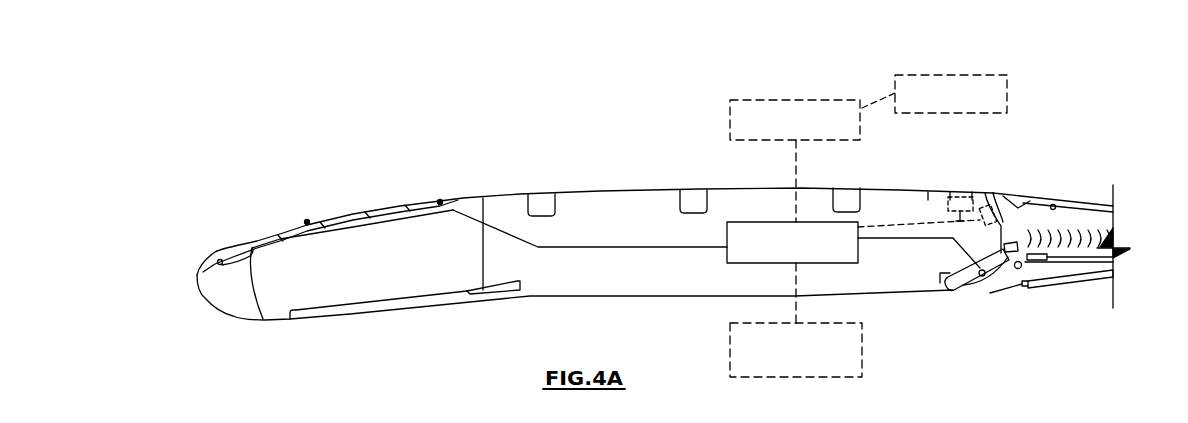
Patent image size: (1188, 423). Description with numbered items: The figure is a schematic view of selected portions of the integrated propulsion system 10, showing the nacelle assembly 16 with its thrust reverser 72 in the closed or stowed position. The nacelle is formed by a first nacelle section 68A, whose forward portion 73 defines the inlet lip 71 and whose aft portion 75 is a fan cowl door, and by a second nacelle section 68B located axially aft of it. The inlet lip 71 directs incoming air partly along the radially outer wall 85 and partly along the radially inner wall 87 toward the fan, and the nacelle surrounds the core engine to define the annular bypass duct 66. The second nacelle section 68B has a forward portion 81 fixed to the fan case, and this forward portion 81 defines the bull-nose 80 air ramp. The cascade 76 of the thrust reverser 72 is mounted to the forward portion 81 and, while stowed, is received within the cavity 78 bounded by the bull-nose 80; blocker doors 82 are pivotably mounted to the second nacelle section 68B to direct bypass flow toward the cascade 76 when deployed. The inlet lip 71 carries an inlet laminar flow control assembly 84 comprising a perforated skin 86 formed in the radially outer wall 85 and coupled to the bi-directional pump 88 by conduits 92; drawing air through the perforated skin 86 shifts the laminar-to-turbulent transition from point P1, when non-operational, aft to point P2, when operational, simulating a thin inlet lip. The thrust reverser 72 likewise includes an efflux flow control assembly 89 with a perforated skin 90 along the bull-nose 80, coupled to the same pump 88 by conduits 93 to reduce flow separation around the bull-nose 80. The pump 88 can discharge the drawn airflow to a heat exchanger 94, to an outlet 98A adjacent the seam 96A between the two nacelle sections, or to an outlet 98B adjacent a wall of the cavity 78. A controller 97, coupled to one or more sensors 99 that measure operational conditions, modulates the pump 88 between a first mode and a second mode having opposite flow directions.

The integrated propulsion system 10 is at (174, 121).
The nacelle assembly 16 is at (264, 149).
The bypass duct 66 is at (683, 349).
The first nacelle section 68A is at (534, 179).
The second nacelle section 68B is at (1106, 183).
The inlet lip 71 is at (225, 246).
The thrust reverser 72 is at (1047, 168).
The forward portion 73 is at (260, 233).
The aft portion 75 is at (743, 188).
The cascade 76 is at (1117, 231).
The cavity 78 is at (1063, 193).
The bull-nose 80 is at (963, 292).
The forward portion 81 is at (946, 192).
The blocker doors 82 is at (1080, 284).
The inlet laminar flow control assembly 84 is at (351, 183).
The radially outer wall 85 is at (463, 197).
The perforated skin 86 is at (295, 224).
The radially inner wall 87 is at (468, 295).
The pump 88 is at (860, 252).
The efflux flow control assembly 89 is at (987, 299).
The perforated skin 90 is at (970, 292).
The conduits 92 is at (602, 246).
The conduits 93 is at (884, 226).
The heat exchanger 94 is at (862, 348).
The seam 96A is at (993, 193).
The controller 97 is at (752, 100).
The outlet 98A is at (947, 200).
The outlet 98B is at (988, 193).
The sensors 99 is at (1010, 87).
The point P1 is at (307, 219).
The point P2 is at (440, 199).